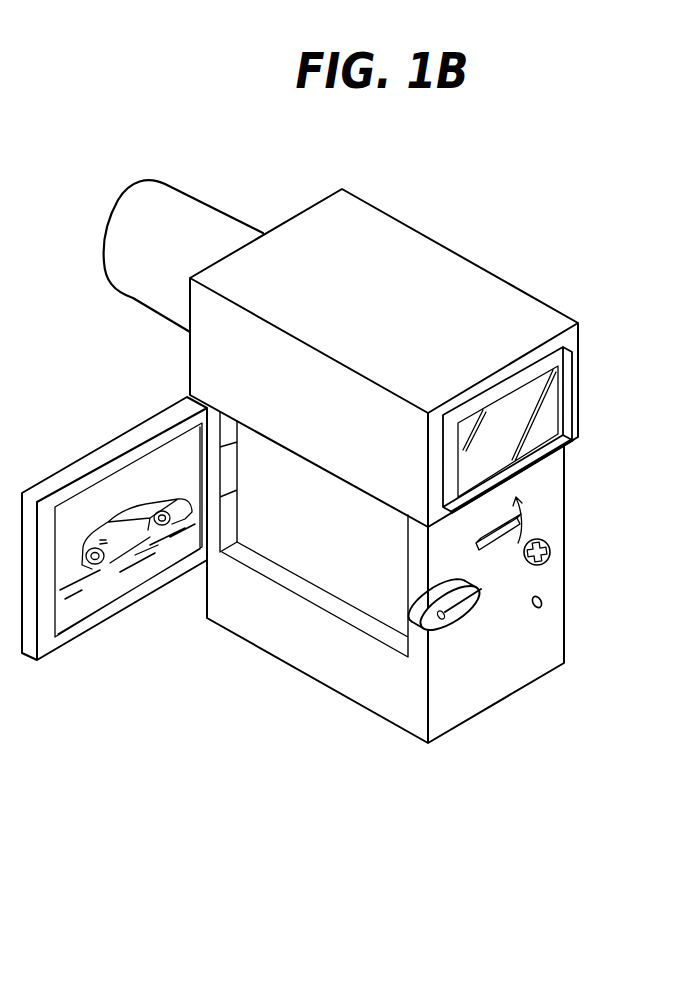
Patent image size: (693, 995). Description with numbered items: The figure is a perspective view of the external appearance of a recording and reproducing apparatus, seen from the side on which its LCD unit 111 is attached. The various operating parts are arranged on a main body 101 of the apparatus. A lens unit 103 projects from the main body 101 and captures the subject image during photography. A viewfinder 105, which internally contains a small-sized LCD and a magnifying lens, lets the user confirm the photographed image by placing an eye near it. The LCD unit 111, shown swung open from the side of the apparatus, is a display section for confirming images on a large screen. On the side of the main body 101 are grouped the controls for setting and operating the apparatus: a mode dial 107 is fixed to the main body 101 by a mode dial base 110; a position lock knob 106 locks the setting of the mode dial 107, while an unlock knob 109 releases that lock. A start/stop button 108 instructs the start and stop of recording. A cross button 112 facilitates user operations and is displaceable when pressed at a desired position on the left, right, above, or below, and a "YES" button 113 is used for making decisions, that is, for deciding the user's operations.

The main body 101 is at (407, 253).
The lens unit 103 is at (217, 223).
The viewfinder 105 is at (548, 420).
The position lock knob 106 is at (493, 537).
The mode dial 107 is at (442, 620).
The start/stop button 108 is at (450, 620).
The unlock knob 109 is at (470, 614).
The mode dial base 110 is at (405, 617).
The LCD unit 111 is at (80, 603).
The cross button 112 is at (550, 553).
The "YES" button 113 is at (543, 603).